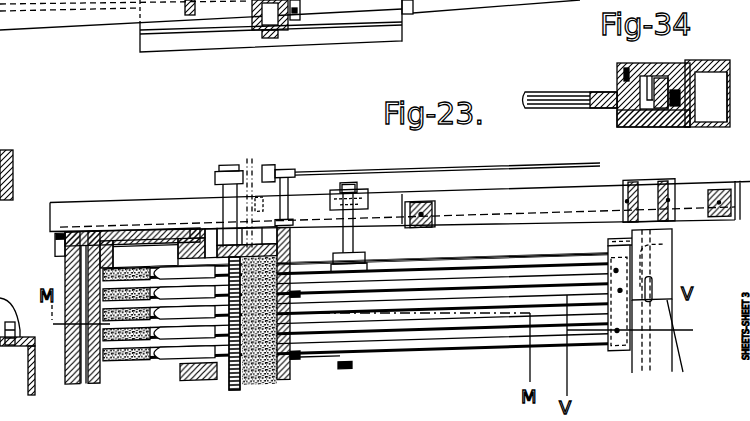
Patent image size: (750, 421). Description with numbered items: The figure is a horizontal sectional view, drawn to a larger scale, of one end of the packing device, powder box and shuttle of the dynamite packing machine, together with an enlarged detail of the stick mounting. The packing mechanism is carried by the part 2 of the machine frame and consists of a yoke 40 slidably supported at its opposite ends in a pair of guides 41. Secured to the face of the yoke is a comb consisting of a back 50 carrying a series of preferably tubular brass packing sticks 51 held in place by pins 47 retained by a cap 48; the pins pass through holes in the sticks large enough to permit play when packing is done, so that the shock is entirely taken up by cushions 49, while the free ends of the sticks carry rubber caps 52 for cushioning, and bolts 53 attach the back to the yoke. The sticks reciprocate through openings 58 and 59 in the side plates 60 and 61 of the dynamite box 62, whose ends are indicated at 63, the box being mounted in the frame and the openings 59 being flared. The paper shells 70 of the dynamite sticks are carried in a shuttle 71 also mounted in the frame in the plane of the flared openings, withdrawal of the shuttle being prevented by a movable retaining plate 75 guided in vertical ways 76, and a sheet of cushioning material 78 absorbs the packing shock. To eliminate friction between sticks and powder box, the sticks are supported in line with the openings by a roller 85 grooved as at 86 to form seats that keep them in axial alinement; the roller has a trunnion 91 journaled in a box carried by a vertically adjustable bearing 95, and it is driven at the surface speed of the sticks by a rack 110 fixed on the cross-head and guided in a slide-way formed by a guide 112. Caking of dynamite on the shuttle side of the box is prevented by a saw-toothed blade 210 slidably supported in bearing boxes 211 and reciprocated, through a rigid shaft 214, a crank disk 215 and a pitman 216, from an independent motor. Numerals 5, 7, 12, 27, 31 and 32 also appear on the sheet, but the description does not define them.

In FIG. 23, the part of the machine frame 2 is at (137, 212).
In FIG. 23, the frame part 5 is at (17, 331).
In FIG. 23, the frame member 7 is at (3, 143).
In FIG. 23, the rail 12 is at (74, 10).
In FIG. 23, the stop 27 is at (258, 198).
In FIG. 23, the arm 31 is at (472, 2).
In FIG. 23, the block 32 is at (420, 12).
In FIG. 23, the yoke 40 is at (667, 345).
In FIG. 34, the yoke 40 is at (718, 128).
In FIG. 23, the guides 41 is at (607, 183).
In FIG. 34, the pins 47 is at (658, 76).
In FIG. 23, the cap 48 is at (622, 353).
In FIG. 34, the cap 48 is at (637, 64).
In FIG. 34, the cushions 49 is at (678, 127).
In FIG. 23, the back 50 is at (612, 352).
In FIG. 34, the back 50 is at (620, 118).
In FIG. 23, the packing sticks 51 is at (472, 282).
In FIG. 34, the packing sticks 51 is at (565, 97).
In FIG. 23, the rubber caps 52 is at (295, 364).
In FIG. 23, the bolts 53 is at (672, 244).
In FIG. 23, the openings 58 is at (290, 370).
In FIG. 23, the openings 59 is at (193, 381).
In FIG. 23, the side plate 60 is at (283, 262).
In FIG. 23, the side plate 61 is at (196, 230).
In FIG. 23, the dynamite box 62 is at (253, 327).
In FIG. 23, the ends of the dynamite box 63 is at (248, 162).
In FIG. 23, the paper shells 70 is at (166, 336).
In FIG. 23, the shuttle 71 is at (103, 232).
In FIG. 23, the retaining plate 75 is at (65, 269).
In FIG. 23, the vertical ways 76 is at (57, 238).
In FIG. 23, the sheet of cushioning material 78 is at (85, 381).
In FIG. 23, the roller 85 is at (343, 365).
In FIG. 23, the grooves 86 is at (345, 362).
In FIG. 23, the trunnion 91 is at (356, 248).
In FIG. 23, the bearing 95 is at (362, 190).
In FIG. 23, the rack 110 is at (197, 38).
In FIG. 23, the guide 112 is at (105, 18).
In FIG. 23, the saw-toothed blade 210 is at (227, 166).
In FIG. 23, the bearing boxes 211 is at (218, 172).
In FIG. 23, the rigid shaft 214 is at (512, 168).
In FIG. 23, the crank disk 215 is at (276, 168).
In FIG. 23, the pitman 216 is at (290, 190).